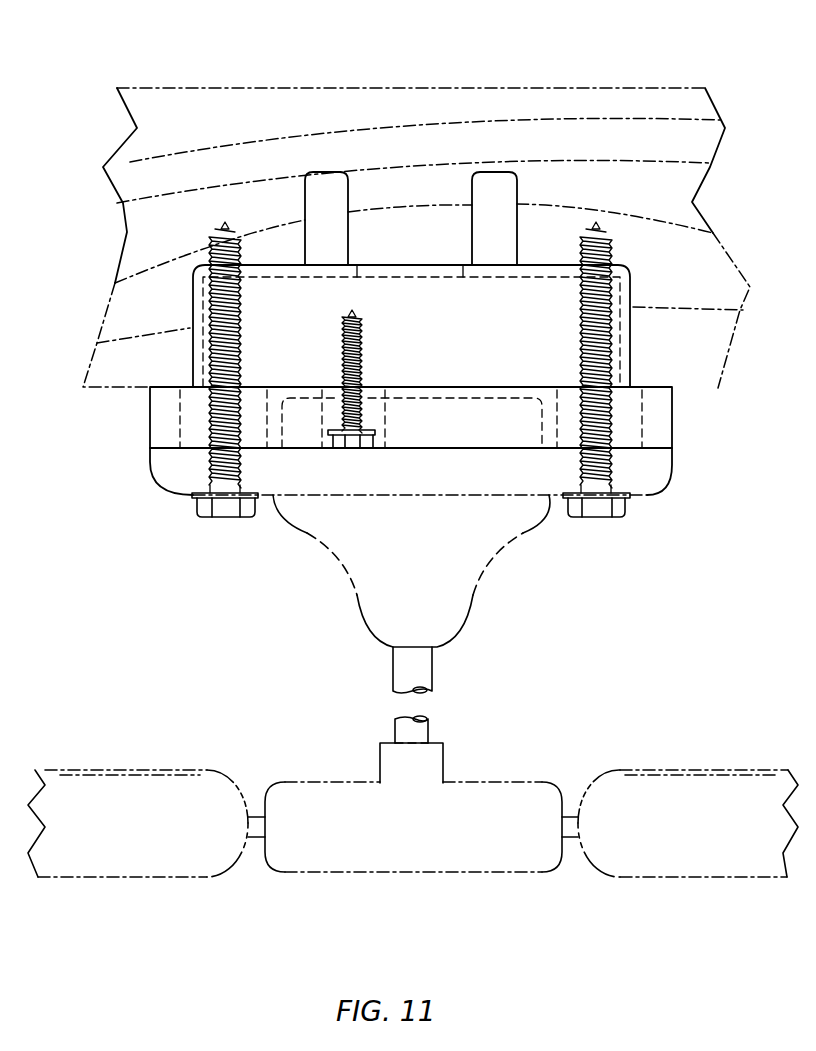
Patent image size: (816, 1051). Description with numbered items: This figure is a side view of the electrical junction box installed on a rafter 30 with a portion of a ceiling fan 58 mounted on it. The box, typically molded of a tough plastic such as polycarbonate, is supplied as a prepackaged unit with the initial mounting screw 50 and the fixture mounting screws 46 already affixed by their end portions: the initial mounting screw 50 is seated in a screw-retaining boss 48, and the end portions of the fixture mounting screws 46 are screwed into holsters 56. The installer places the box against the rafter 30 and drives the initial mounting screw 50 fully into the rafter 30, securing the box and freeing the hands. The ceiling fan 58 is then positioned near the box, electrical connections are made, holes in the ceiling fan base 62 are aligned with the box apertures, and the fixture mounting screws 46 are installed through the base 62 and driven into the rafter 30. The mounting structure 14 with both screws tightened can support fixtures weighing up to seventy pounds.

The rafter 30 is at (203, 108).
The mounting bracket 14 is at (377, 263).
The holsters 56 is at (320, 183).
The initial mounting screw 50 is at (362, 328).
The screw-retaining boss 48 is at (375, 417).
The ceiling fan base 62 is at (658, 477).
The fixture mounting screws 46 is at (221, 511).
The ceiling fan 58 is at (437, 748).